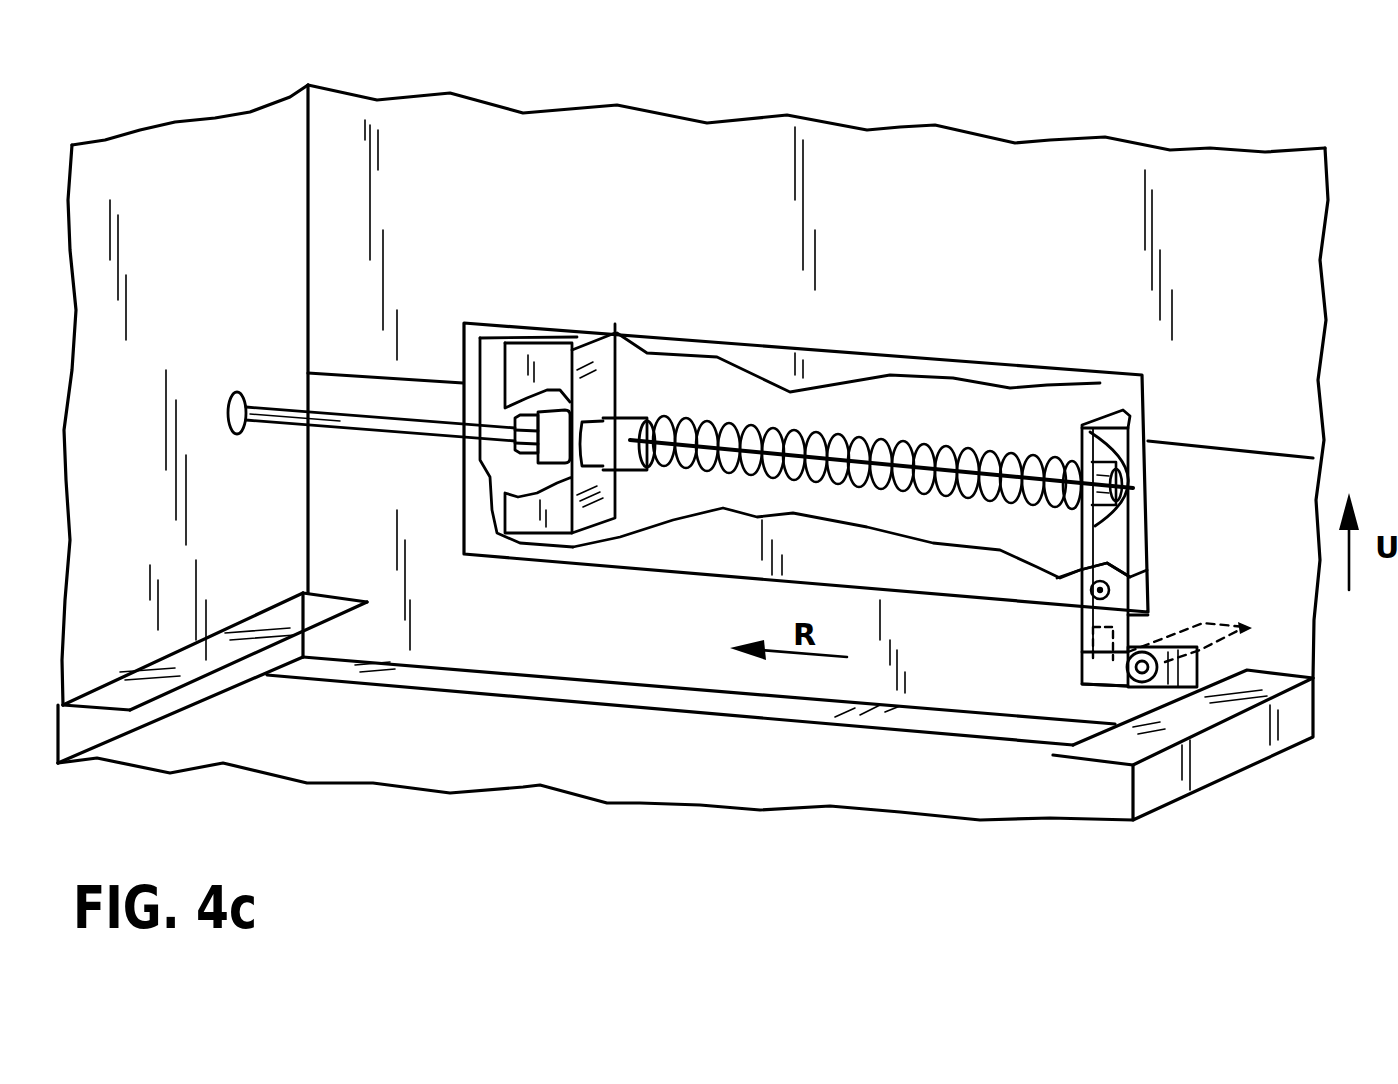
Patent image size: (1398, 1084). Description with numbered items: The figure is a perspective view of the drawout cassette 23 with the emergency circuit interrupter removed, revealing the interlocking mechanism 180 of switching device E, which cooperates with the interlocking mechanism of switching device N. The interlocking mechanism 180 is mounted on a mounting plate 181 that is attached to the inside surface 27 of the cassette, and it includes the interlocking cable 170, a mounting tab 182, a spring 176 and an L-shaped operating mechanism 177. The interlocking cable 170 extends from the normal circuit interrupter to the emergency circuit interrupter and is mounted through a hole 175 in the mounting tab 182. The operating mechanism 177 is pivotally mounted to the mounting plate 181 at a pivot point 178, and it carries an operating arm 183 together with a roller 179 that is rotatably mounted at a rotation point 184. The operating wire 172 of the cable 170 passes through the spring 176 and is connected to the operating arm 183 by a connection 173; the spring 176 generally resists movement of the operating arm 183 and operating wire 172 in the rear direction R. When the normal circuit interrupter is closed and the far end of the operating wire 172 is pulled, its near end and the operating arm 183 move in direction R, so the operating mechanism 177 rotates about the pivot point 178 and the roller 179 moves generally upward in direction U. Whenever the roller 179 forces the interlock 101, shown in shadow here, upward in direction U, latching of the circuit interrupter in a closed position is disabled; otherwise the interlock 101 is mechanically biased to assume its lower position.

The inside surface 27 is at (913, 180).
The interlocking cable 170 is at (433, 437).
The mounting tab 182 is at (580, 333).
The hole 175 is at (617, 333).
The spring 176 is at (877, 437).
The operating arm 183 is at (1100, 397).
The connection 173 is at (1130, 418).
The operating wire 172 is at (1130, 508).
The pivot point 178 is at (1110, 590).
The interlock 101 is at (1210, 622).
The roller 179 is at (1213, 670).
The rotation point 184 is at (1100, 686).
The L-shaped operating mechanism 177 is at (1100, 548).
The interlocking mechanism 180 is at (575, 590).
The mounting plate 181 is at (728, 563).
The drawout cassette 23 is at (1250, 831).